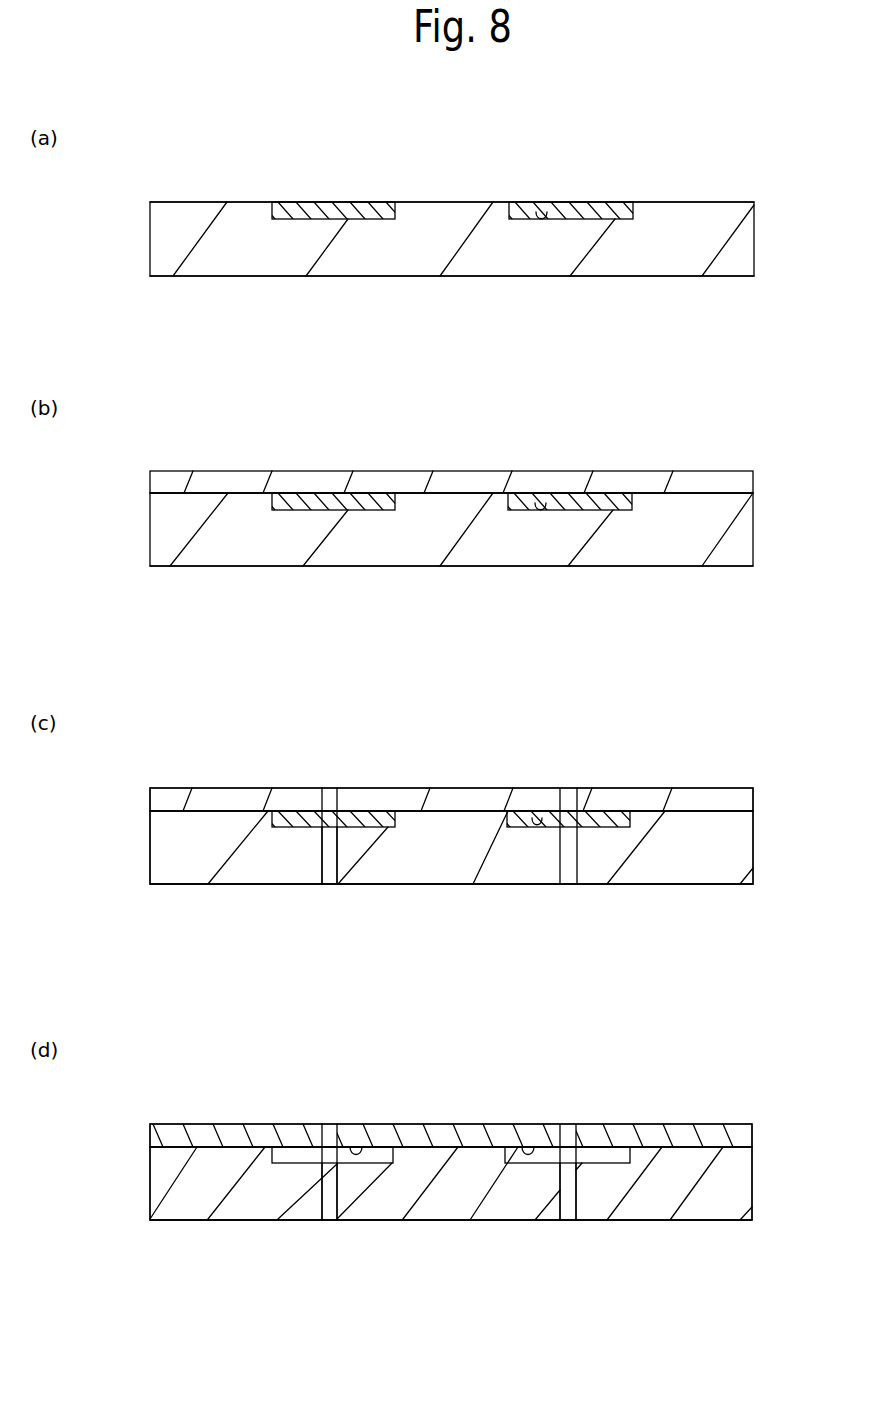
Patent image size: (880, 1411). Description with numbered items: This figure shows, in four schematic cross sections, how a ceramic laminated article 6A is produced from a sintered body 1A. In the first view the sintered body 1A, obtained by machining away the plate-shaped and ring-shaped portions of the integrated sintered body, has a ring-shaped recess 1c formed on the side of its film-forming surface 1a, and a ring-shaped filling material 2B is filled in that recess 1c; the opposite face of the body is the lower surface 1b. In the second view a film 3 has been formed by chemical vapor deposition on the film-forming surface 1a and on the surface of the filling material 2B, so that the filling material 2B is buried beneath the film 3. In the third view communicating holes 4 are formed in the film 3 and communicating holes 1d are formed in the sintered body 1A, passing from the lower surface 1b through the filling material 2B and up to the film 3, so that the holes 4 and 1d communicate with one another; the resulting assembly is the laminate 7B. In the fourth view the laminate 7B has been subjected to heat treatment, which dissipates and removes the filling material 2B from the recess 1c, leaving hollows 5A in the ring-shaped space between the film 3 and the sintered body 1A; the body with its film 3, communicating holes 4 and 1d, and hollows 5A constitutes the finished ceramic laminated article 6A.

The sintered body 1A is at (755, 267).
The film-forming surface 1a is at (687, 202).
The second main surface of substrate 1b is at (697, 276).
The ring-shaped recess 1c is at (541, 219).
The communicating holes 1d is at (323, 862).
The filling material 2B is at (353, 202).
The film 3 is at (443, 482).
The communicating holes 4 is at (321, 803).
The hollows 5A is at (355, 1147).
The laminate 7B is at (767, 796).
The ceramic laminated article 6A is at (767, 1133).